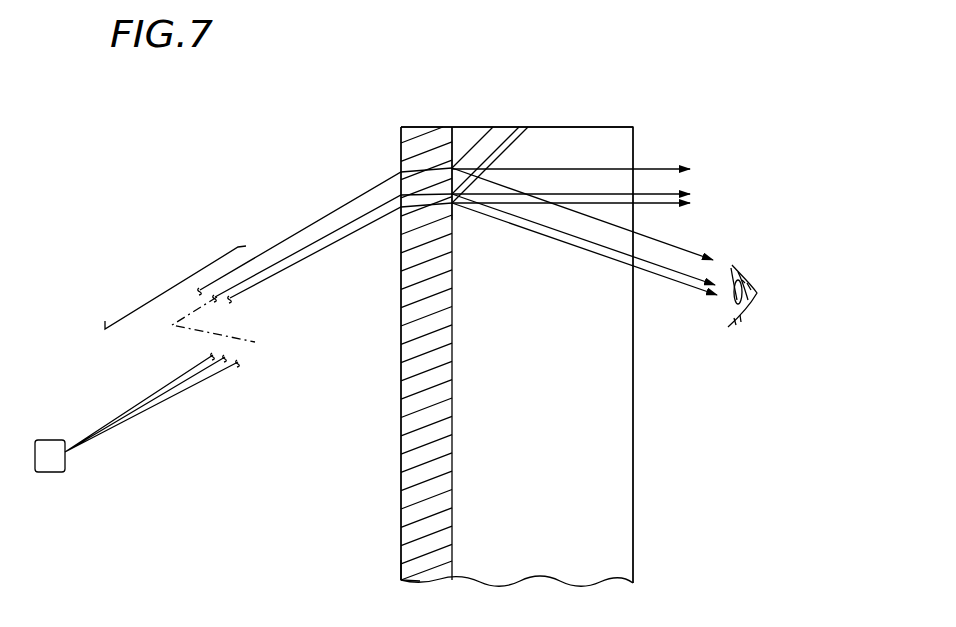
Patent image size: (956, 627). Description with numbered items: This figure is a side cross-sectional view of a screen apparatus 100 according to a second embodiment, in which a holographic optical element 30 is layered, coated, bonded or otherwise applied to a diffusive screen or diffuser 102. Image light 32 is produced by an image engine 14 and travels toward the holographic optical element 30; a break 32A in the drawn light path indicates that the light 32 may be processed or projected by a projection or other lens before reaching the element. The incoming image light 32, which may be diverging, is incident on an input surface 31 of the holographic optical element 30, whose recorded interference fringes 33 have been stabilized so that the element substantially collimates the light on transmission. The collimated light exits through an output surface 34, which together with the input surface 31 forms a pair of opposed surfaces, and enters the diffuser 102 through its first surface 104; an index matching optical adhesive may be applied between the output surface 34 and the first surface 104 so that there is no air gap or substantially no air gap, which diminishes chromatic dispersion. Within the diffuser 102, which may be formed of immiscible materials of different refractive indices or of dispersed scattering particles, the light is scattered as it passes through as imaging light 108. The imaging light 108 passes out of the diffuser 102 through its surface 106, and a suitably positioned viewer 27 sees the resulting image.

The screen apparatus 100 is at (378, 77).
The diffuser 102 is at (588, 127).
The first surface of the diffuser 104 is at (462, 138).
The surface of the diffuser 106 is at (633, 547).
The scattered imaging light 108 is at (567, 252).
The holographic optical element 30 is at (401, 356).
The input surface 31 is at (401, 512).
The interference fringes 33 is at (418, 577).
The output surface 34 is at (453, 556).
The image light 32 is at (338, 197).
The break in the light path 32A is at (181, 281).
The image engine 14 is at (52, 468).
The viewer 27 is at (733, 267).